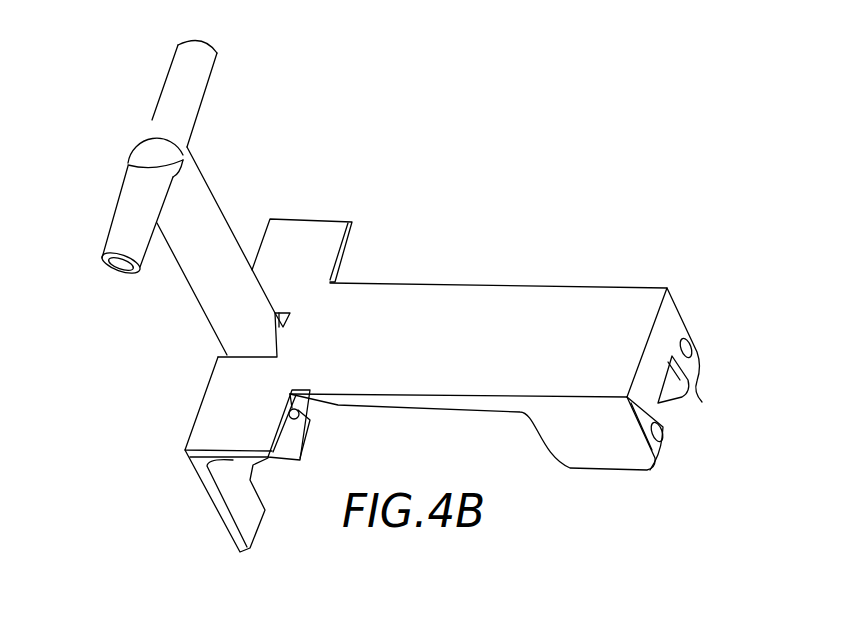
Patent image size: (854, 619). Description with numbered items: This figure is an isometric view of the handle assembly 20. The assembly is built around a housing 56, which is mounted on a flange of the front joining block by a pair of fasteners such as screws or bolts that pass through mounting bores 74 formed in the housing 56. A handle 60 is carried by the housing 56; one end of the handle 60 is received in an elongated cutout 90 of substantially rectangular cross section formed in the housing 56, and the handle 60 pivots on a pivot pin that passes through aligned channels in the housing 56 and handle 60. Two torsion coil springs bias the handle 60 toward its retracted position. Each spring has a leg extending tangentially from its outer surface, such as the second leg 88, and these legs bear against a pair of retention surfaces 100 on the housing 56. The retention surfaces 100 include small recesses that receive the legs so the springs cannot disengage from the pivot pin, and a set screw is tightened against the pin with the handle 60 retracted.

The handle assembly 20 is at (457, 377).
The housing 56 is at (500, 285).
The handle 60 is at (212, 197).
The mounting bores 74 is at (672, 423).
The second leg 88 is at (312, 410).
The elongated cutout 90 is at (283, 327).
The retention surfaces 100 is at (358, 280).